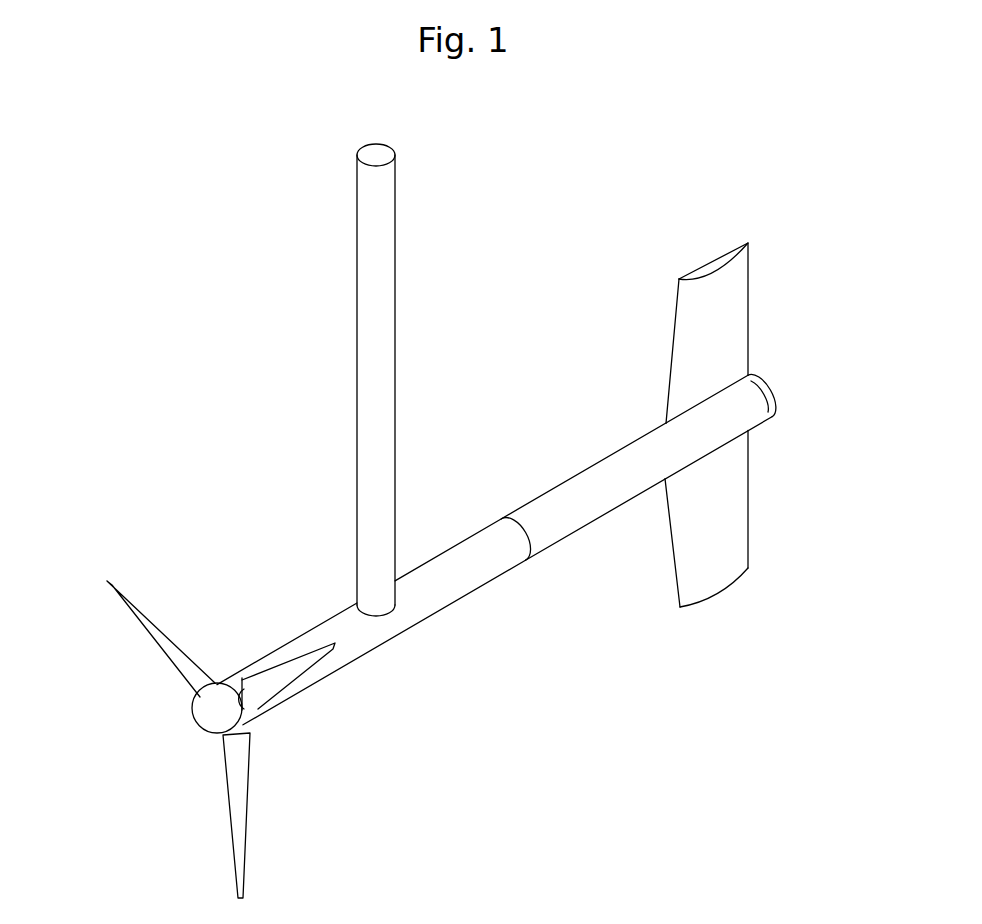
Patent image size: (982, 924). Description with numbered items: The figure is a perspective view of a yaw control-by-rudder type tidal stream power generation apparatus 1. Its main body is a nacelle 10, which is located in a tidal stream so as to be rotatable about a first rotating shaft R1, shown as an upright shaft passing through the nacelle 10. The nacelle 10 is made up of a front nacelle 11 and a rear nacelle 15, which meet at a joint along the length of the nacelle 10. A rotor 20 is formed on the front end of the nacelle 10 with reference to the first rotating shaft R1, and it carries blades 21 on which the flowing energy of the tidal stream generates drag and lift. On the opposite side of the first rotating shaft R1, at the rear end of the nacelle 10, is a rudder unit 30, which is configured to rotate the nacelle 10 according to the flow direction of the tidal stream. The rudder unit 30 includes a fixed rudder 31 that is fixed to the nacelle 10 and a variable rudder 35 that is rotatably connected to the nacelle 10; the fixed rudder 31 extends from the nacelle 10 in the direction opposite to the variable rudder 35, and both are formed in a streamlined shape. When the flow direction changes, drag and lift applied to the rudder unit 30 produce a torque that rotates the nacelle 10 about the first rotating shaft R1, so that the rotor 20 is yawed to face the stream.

The yaw control-by-rudder type tidal stream power generation apparatus 1 is at (219, 135).
The first rotating shaft R1 is at (357, 337).
The nacelle 10 is at (473, 393).
The front nacelle 11 is at (468, 552).
The rear nacelle 15 is at (562, 493).
The rotor 20 is at (193, 726).
The blades 21 is at (150, 623).
The rudder unit 30 is at (848, 326).
The fixed rudder 31 is at (735, 334).
The variable rudder 35 is at (738, 466).